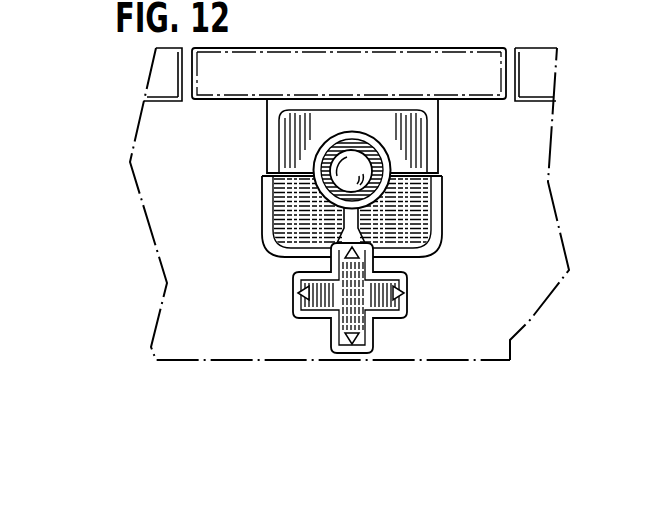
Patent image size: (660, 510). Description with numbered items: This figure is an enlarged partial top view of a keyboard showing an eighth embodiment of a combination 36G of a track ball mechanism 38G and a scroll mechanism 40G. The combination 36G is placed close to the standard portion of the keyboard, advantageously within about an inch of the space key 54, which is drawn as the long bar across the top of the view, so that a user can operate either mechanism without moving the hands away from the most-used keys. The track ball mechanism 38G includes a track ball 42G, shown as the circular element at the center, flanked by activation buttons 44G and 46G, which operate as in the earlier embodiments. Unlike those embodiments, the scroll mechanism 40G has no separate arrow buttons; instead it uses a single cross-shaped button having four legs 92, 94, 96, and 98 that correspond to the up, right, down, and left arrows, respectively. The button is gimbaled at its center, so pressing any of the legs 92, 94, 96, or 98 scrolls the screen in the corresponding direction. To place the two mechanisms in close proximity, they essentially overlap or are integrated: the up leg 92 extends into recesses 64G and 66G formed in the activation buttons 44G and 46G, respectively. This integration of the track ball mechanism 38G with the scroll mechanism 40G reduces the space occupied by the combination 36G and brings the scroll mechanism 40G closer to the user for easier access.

The space key 54 is at (470, 55).
The track ball mechanism 38G is at (517, 151).
The track ball 42G is at (362, 155).
The activation button 44G is at (272, 193).
The activation button 46G is at (425, 200).
The recess 64G is at (272, 257).
The recess 66G is at (420, 258).
The leg 92 is at (300, 285).
The leg 98 is at (303, 294).
The leg 94 is at (403, 291).
The leg 96 is at (354, 340).
The combination 36G is at (218, 313).
The scroll mechanism 40G is at (465, 301).